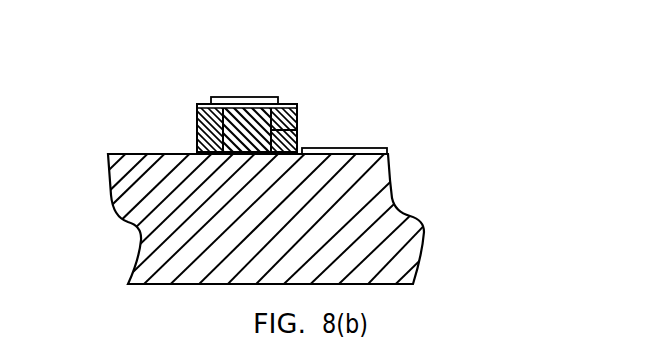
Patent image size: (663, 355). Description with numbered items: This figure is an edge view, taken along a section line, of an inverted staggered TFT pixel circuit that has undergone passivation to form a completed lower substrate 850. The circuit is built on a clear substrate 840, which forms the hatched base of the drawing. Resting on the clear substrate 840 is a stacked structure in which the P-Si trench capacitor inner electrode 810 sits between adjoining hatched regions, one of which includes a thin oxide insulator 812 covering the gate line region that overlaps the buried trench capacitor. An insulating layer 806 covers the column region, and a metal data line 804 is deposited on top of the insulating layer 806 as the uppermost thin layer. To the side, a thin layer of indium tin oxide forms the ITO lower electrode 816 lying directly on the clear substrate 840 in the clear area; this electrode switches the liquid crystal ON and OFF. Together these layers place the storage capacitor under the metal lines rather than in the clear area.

The completed lower substrate 850 is at (89, 33).
The metal data line 804 is at (240, 103).
The insulating layer 806 is at (205, 104).
The P-Si trench capacitor inner electrode 810 is at (257, 105).
The thin oxide insulator 812 is at (300, 129).
The ITO lower electrode 816 is at (379, 147).
The clear substrate 840 is at (424, 226).